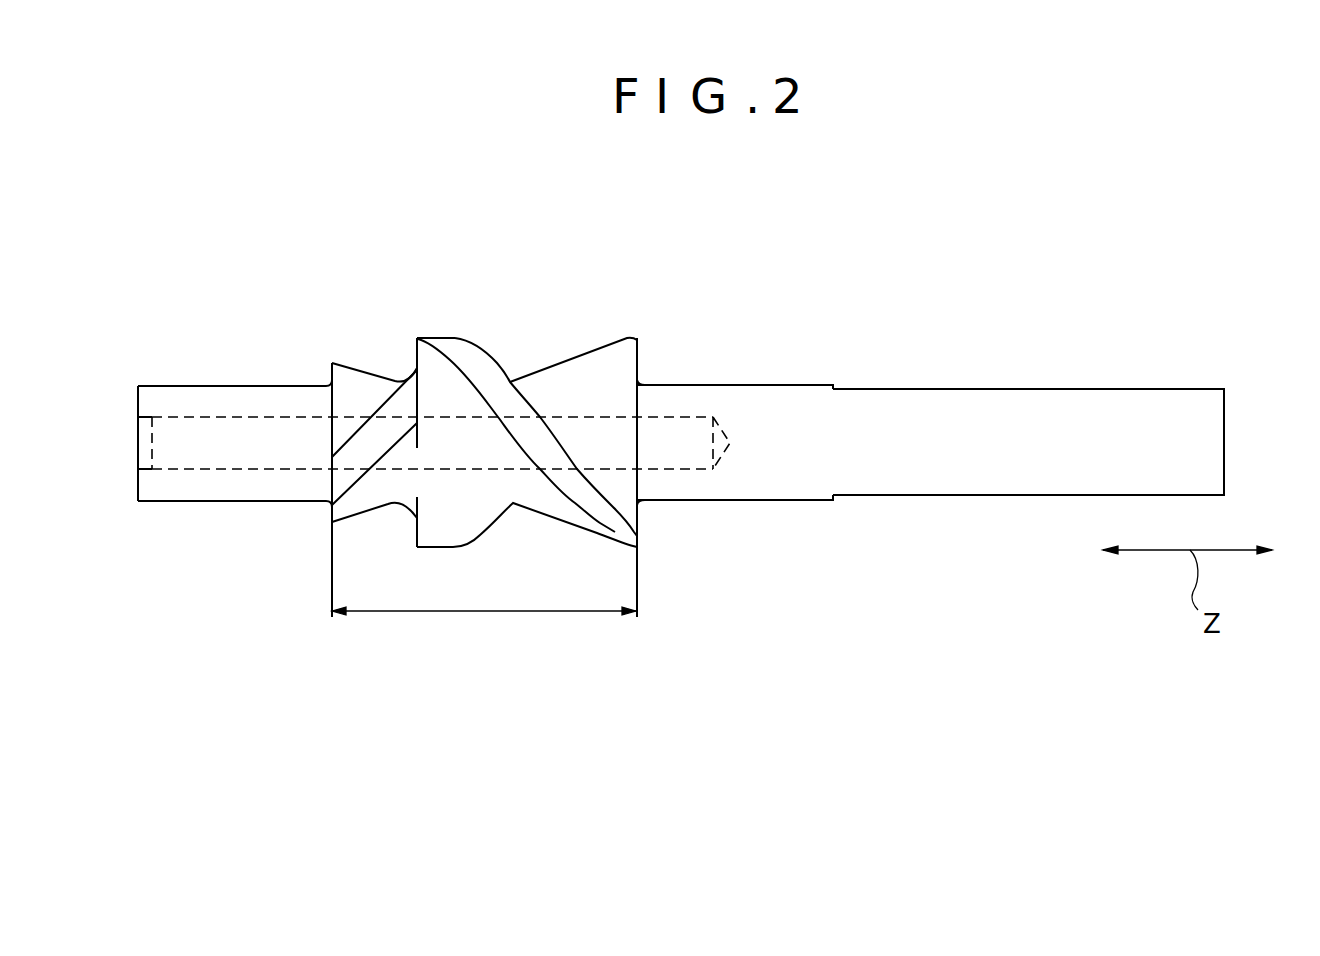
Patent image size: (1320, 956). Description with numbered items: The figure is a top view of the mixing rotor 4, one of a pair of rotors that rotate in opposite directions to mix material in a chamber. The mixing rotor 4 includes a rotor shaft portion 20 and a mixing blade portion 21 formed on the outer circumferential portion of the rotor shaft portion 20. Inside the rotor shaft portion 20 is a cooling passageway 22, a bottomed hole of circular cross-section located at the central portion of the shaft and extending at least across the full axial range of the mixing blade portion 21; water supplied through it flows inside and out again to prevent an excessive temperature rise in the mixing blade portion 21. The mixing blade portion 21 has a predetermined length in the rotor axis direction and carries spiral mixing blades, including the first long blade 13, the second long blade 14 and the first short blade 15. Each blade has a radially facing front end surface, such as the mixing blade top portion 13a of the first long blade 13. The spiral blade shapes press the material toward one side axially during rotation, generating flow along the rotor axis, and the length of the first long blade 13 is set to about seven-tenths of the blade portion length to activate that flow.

The mixing rotor 4 is at (1097, 252).
The rotor shaft portion 20 is at (790, 383).
The mixing blade portion 21 is at (614, 290).
The cooling passageway 22 is at (260, 418).
The first long blade 13 is at (472, 348).
The mixing blade top portion 13a is at (493, 382).
The second long blade 14 is at (480, 535).
The first short blade 15 is at (380, 407).